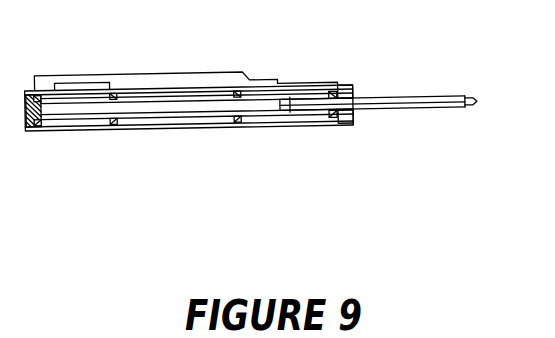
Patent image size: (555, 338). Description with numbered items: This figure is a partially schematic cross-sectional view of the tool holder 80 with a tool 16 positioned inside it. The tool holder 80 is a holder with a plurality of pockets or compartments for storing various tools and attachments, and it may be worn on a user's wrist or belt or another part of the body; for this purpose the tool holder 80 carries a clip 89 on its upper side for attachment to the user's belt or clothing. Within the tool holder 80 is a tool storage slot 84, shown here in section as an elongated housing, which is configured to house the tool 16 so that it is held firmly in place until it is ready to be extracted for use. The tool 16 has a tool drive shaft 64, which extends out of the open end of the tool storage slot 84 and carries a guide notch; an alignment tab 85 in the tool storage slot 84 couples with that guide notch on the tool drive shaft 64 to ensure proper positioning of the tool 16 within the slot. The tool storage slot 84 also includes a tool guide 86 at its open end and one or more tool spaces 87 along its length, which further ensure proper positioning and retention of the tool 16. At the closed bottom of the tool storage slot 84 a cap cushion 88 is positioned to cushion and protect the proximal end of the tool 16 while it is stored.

The tool 16 is at (450, 96).
The tool drive shaft 64 is at (418, 108).
The tool holder 80 is at (338, 85).
The tool storage slot 84 is at (143, 122).
The alignment tab 85 is at (353, 93).
The tool guide 86 is at (353, 122).
The tool space 87 is at (238, 122).
The cap cushion 88 is at (42, 124).
The clip 89 is at (243, 74).